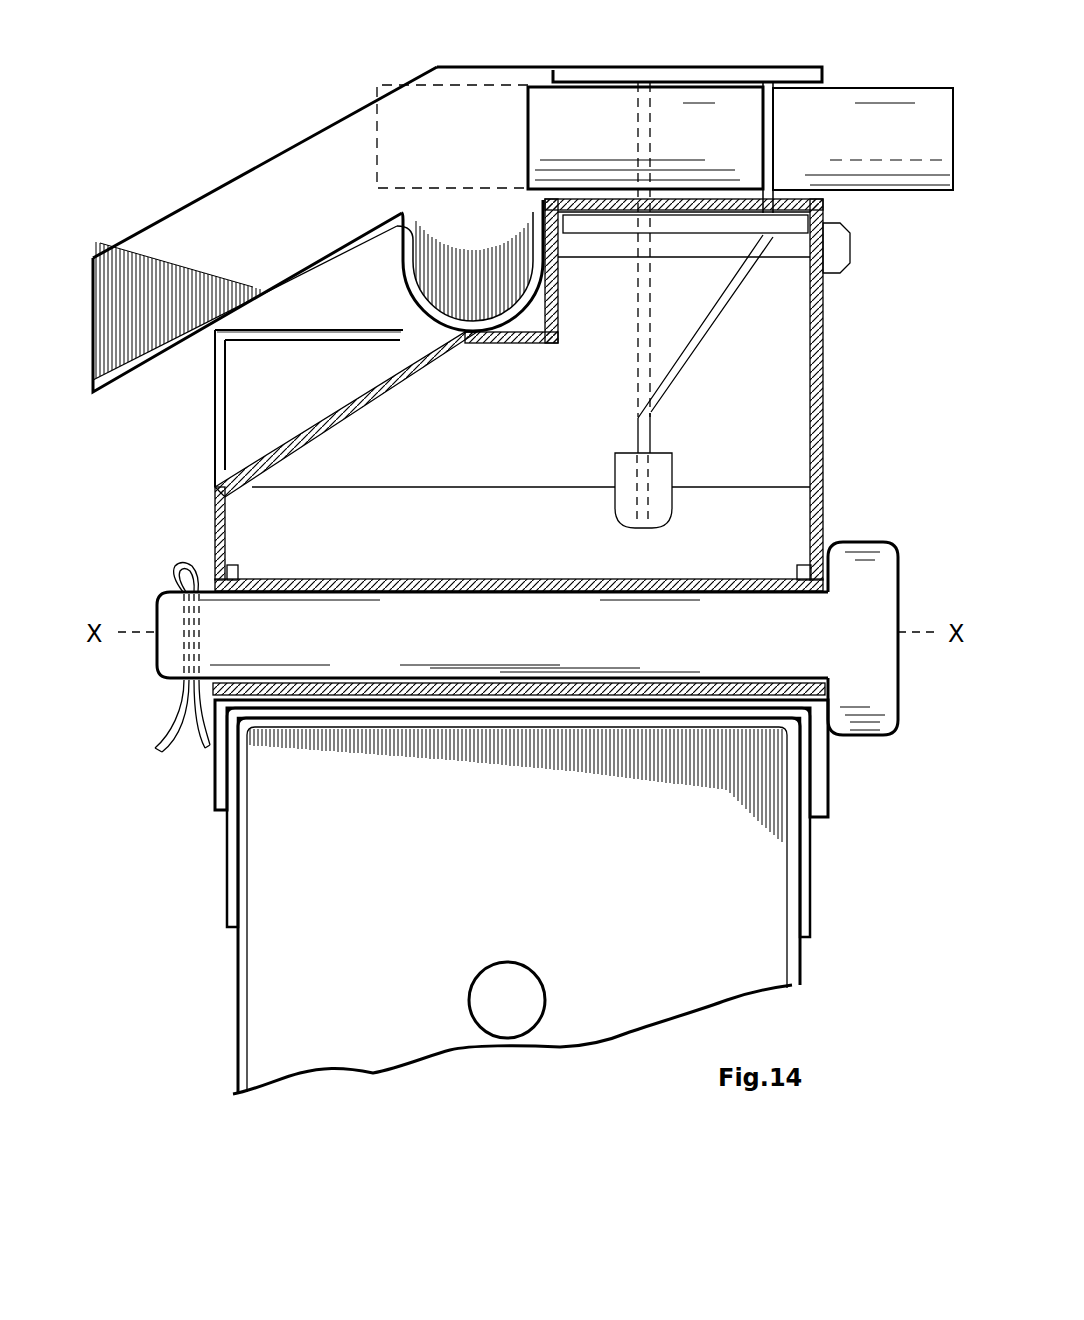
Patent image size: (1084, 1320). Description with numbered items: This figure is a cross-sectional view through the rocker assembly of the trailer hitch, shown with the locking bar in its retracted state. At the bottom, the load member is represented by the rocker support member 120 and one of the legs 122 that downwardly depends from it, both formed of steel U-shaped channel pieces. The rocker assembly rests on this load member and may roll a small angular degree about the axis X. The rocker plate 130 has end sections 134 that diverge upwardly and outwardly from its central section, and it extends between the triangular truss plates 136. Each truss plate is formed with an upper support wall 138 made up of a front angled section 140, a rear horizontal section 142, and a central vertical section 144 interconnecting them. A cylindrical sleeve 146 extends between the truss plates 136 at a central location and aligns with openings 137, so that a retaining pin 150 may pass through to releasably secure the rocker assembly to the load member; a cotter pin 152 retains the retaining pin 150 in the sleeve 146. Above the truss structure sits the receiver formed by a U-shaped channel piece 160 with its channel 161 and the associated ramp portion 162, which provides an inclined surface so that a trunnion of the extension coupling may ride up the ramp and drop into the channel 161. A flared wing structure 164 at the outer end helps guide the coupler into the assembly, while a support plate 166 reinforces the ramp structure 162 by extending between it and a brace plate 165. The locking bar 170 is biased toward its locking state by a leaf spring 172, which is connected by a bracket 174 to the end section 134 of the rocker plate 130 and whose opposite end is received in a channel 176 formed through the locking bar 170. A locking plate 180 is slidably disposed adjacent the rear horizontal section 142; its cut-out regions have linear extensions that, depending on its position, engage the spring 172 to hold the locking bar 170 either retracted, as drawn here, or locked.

The rocker support member 120 is at (800, 862).
The legs 122 is at (790, 965).
The rocker plate 130 is at (787, 483).
The end sections 134 is at (531, 518).
The triangular truss plates 136 is at (207, 577).
The openings 137 is at (205, 576).
The upper support wall 138 is at (508, 345).
The front angled section 140 is at (320, 433).
The rear horizontal section 142 is at (785, 197).
The central vertical section 144 is at (558, 307).
The cylindrical sleeve 146 is at (337, 577).
The retaining pin 150 is at (600, 693).
The cotter pin 152 is at (177, 707).
The U-shaped channel piece 160 is at (445, 315).
The channel 161 is at (460, 225).
The ramp portion 162 is at (270, 278).
The flared wing structures 164 is at (180, 220).
The brace plates 165 is at (338, 335).
The support plates 166 is at (372, 272).
The locking bars 170 is at (597, 115).
The leaf spring 172 is at (713, 323).
The bracket 174 is at (662, 472).
The channel 176 is at (778, 115).
The locking plate 180 is at (793, 247).